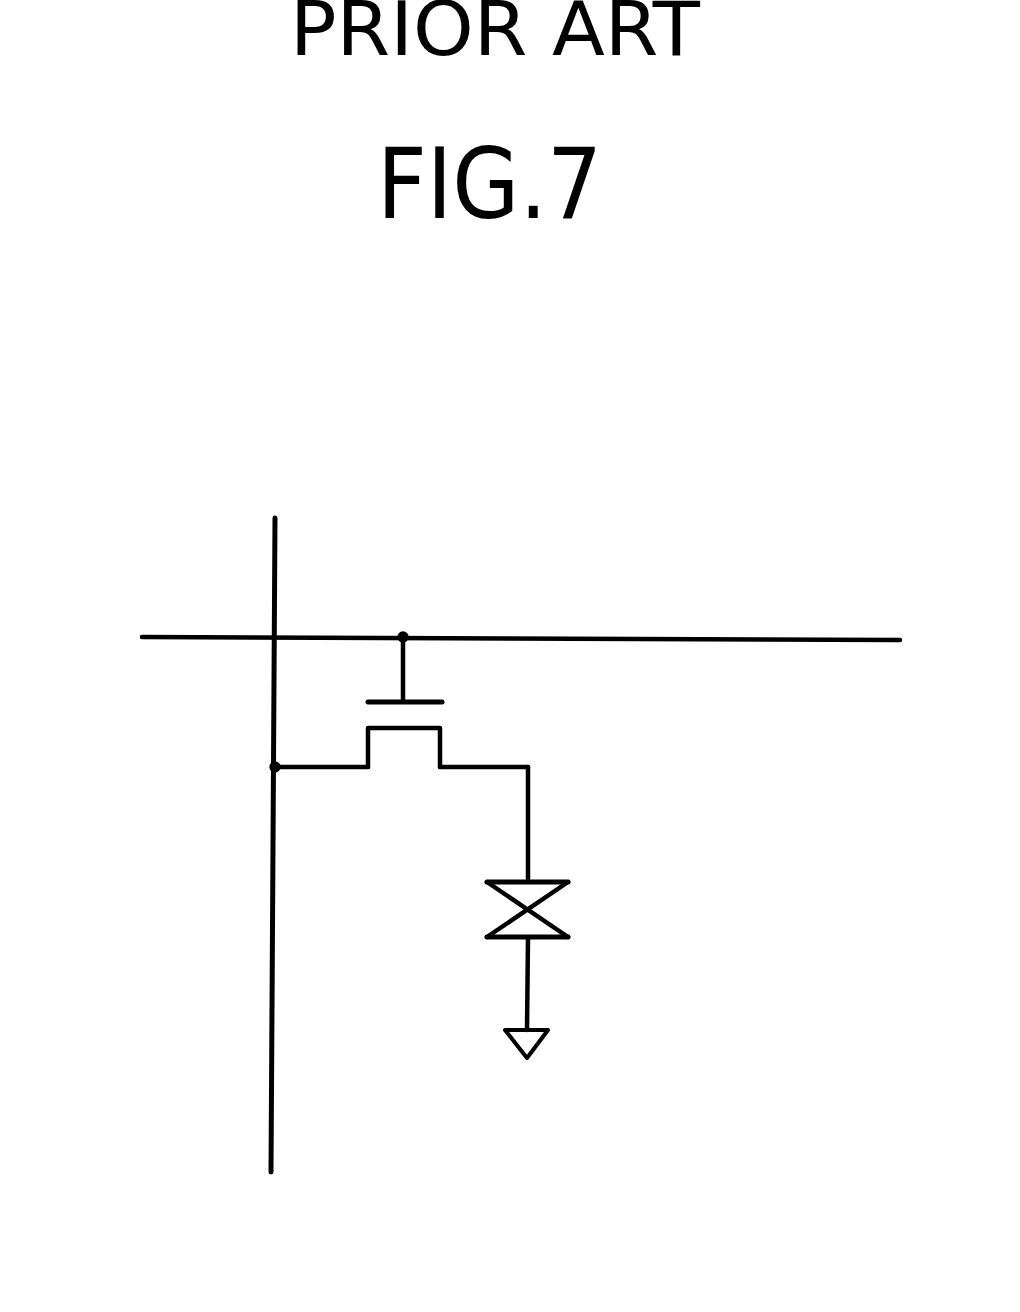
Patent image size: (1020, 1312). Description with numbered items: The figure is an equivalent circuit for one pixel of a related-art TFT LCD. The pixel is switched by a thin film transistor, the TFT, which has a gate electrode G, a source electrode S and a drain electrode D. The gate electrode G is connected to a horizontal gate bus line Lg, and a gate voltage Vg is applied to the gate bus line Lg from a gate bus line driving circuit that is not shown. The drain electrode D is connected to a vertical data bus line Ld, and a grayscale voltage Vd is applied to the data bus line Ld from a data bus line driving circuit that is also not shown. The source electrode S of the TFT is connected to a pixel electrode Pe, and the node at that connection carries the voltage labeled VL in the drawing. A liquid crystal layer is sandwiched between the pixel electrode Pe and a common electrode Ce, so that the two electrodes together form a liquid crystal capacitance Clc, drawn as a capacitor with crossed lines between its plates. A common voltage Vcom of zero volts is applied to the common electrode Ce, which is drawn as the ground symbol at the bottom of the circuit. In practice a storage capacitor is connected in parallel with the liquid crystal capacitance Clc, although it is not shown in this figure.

The grayscale voltage Vd is at (276, 473).
The data bus line Ld is at (278, 558).
The gate bus line Lg is at (183, 633).
The gate voltage Vg is at (95, 635).
The gate electrode G is at (415, 668).
The drain electrode D is at (319, 741).
The source electrode S is at (484, 738).
The element TFT is at (399, 769).
The pixel voltage VL is at (582, 800).
The pixel electrode Pe is at (547, 877).
The liquid crystal capacitance Clc is at (573, 914).
The common electrode Ce is at (548, 941).
The common voltage Vcom is at (537, 1031).